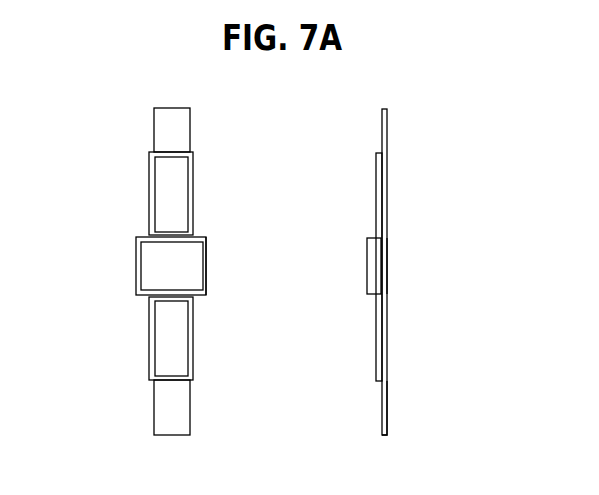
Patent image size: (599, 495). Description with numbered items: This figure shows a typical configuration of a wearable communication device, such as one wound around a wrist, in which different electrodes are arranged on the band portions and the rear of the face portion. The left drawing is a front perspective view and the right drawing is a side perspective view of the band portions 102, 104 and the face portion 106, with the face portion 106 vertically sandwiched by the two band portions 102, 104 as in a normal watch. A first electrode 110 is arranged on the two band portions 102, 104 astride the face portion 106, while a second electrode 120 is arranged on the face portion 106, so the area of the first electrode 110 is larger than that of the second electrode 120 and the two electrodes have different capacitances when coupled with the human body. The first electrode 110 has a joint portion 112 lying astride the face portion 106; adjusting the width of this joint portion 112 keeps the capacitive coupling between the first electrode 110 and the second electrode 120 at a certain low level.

The band portion 102 is at (156, 131).
The band portion 104 is at (156, 406).
The face portion 106 is at (190, 250).
The first electrode 110 is at (151, 184).
The joint portion 112 is at (142, 268).
The second electrode 120 is at (206, 286).